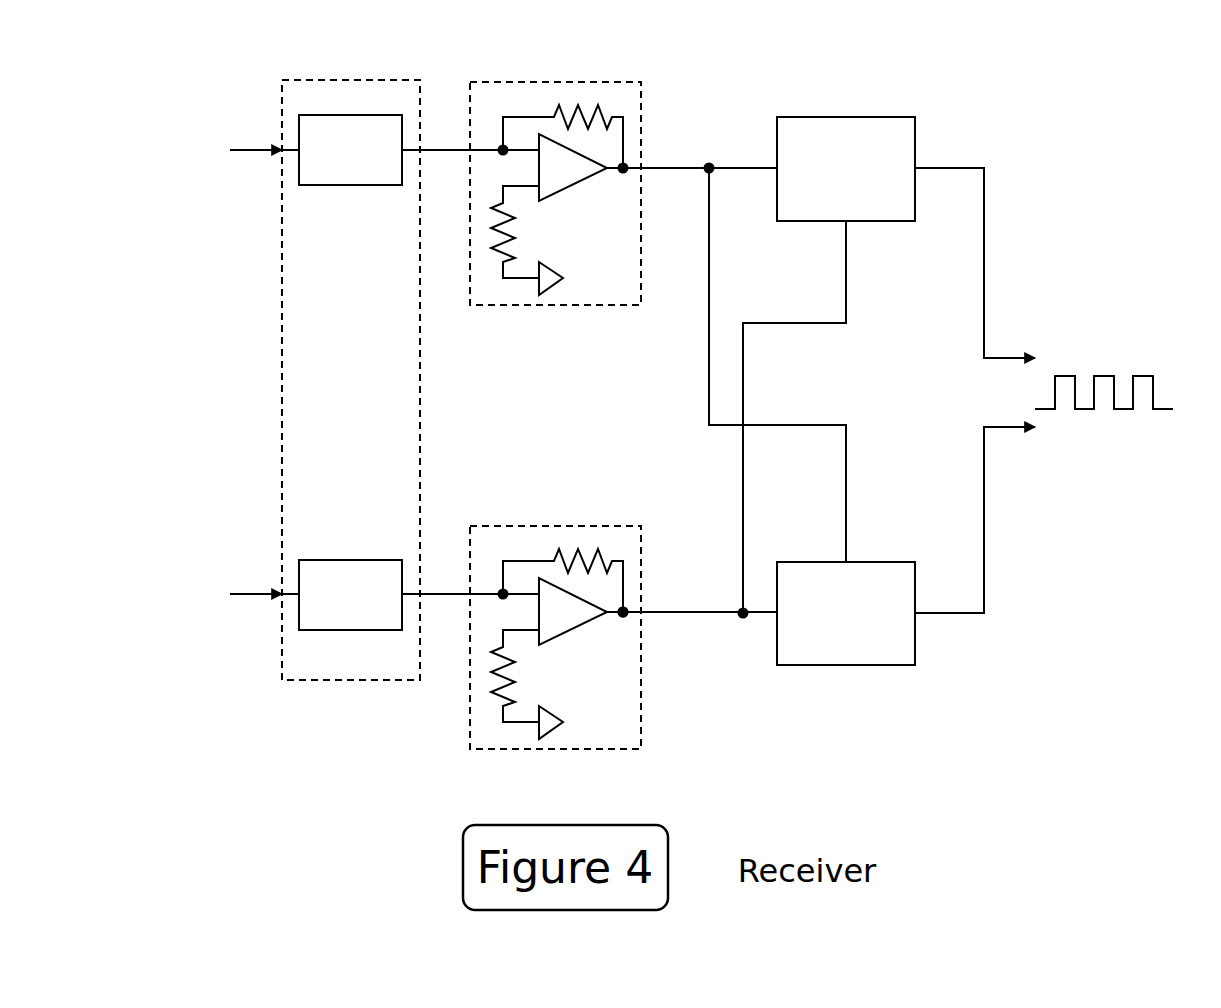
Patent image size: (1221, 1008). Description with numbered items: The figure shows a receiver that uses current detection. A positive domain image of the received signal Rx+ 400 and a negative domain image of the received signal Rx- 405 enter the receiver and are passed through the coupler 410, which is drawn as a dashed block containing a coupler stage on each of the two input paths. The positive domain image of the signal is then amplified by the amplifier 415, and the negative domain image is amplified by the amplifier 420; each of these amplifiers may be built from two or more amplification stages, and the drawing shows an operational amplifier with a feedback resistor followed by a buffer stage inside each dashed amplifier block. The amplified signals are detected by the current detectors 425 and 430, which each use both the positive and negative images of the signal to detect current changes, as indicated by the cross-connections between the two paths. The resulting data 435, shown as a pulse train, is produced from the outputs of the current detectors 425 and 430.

The positive domain image of received signal Rx+ 400 is at (186, 130).
The negative domain image of received signal Rx- 405 is at (193, 562).
The coupler 410 is at (278, 321).
The amplifier 415 is at (623, 310).
The amplifier 420 is at (625, 522).
The current detector 425 is at (846, 113).
The current detector 430 is at (846, 669).
The resulting data 435 is at (1104, 372).